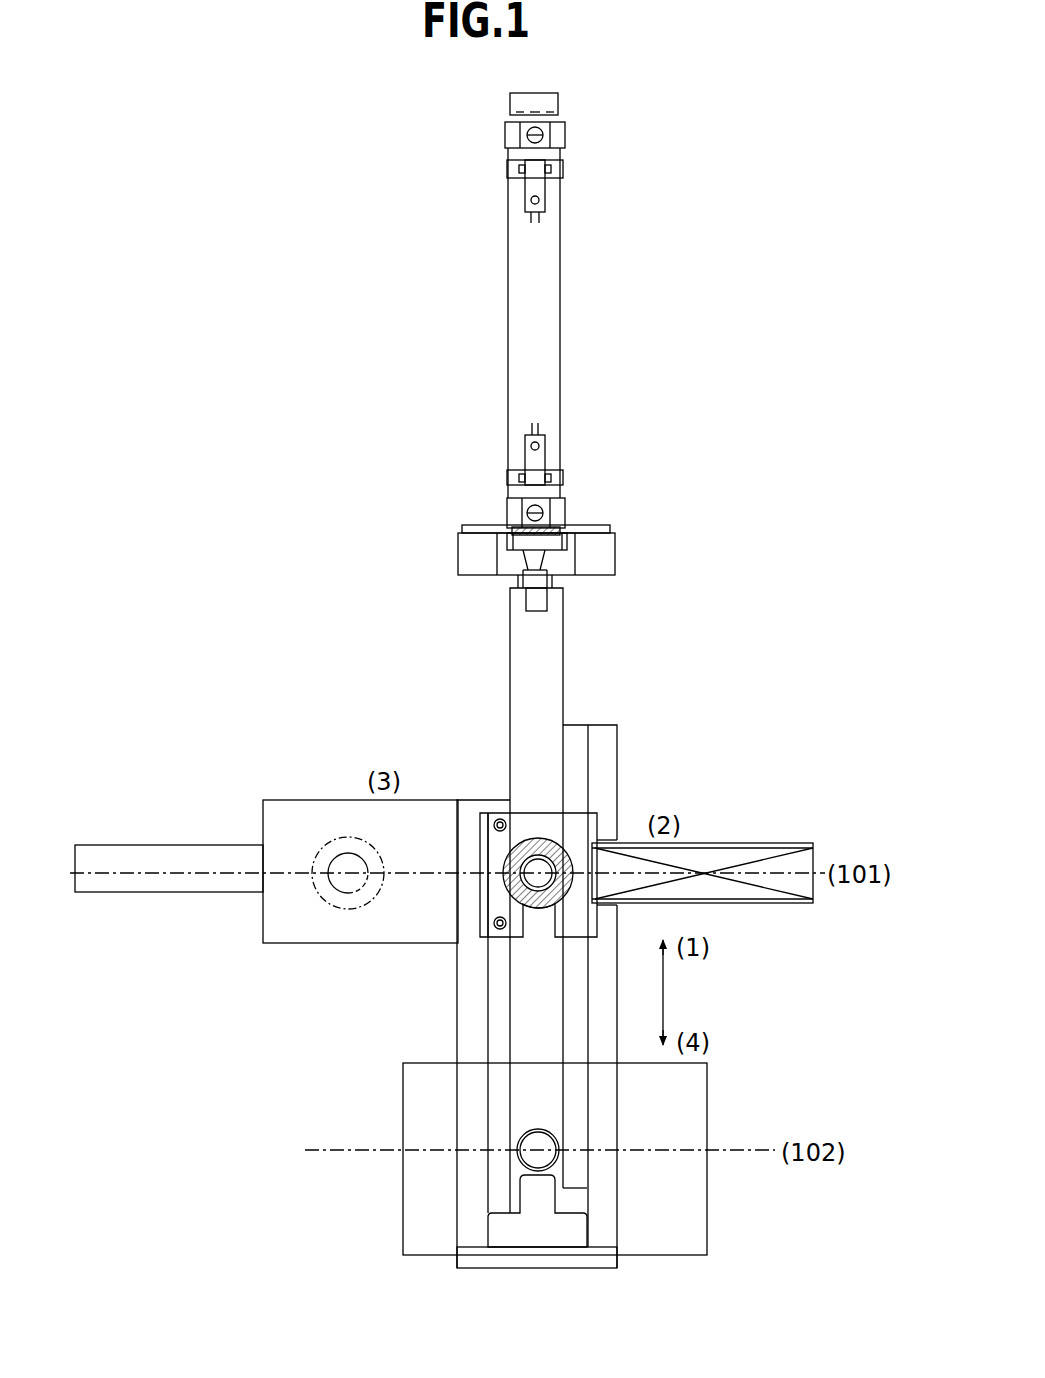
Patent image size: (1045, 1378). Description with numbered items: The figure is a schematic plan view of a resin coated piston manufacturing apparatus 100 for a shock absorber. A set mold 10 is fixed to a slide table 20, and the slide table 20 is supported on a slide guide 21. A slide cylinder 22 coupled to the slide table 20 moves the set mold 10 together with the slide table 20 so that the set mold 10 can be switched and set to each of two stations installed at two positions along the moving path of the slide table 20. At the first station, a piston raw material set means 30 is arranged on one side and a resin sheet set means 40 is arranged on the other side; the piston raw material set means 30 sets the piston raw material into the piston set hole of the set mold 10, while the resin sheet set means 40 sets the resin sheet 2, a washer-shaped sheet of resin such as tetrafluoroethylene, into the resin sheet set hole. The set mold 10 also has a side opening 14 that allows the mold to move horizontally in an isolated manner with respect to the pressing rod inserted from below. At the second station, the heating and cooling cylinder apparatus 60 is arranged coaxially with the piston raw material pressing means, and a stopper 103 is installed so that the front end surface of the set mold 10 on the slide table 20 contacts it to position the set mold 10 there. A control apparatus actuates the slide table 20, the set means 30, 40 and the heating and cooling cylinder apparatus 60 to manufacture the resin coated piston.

The resin coated piston manufacturing apparatus 100 is at (676, 344).
The slide cylinder 22 is at (552, 255).
The slide table 20 is at (552, 667).
The slide guide 21 is at (475, 808).
The resin sheet set means 40 is at (272, 798).
The resin sheet 2 is at (323, 897).
The set mold 10 is at (573, 825).
The side opening 14 is at (537, 905).
The piston raw material set means 30 is at (755, 840).
The heating and cooling cylinder apparatus 60 is at (401, 1101).
The stopper 103 is at (512, 1235).